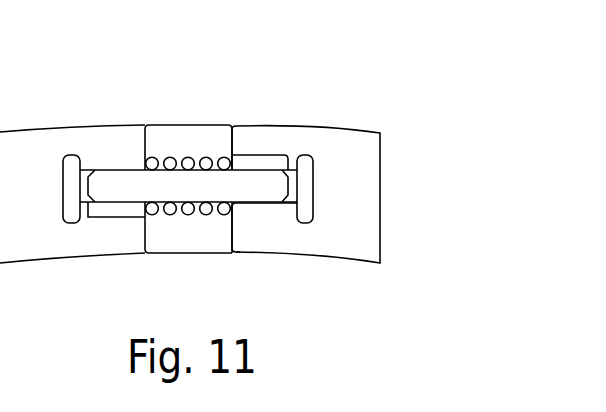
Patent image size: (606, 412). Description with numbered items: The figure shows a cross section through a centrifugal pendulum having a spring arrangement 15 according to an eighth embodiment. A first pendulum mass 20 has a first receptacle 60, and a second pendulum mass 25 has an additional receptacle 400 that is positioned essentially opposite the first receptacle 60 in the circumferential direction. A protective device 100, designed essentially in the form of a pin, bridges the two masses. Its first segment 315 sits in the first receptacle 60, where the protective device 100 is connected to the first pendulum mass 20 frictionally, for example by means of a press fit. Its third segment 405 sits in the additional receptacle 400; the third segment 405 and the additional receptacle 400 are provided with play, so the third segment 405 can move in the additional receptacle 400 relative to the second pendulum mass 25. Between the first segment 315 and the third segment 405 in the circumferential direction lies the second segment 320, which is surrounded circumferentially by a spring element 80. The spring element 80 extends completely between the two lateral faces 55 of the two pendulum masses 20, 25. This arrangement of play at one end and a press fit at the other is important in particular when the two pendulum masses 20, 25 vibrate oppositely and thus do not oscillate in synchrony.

The spring arrangement 15 is at (234, 88).
The first pendulum mass 20 is at (20, 250).
The second pendulum mass 25 is at (330, 150).
The lateral faces 55 is at (146, 132).
The first receptacle 60 is at (118, 168).
The spring element 80 is at (222, 210).
The protective device 100 is at (152, 183).
The first segment 315 is at (118, 218).
The second segment 320 is at (187, 126).
The additional receptacle 400 is at (270, 205).
The third segment 405 is at (260, 154).